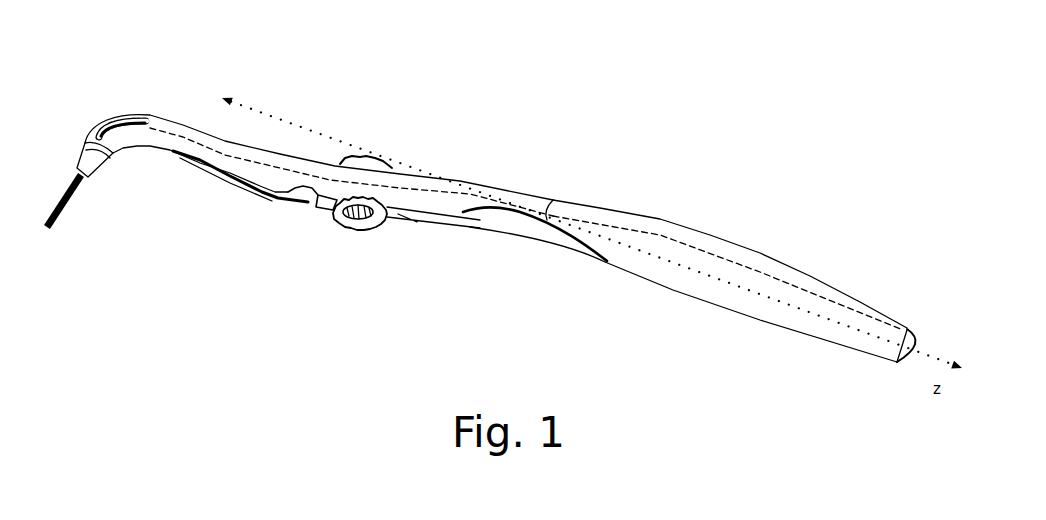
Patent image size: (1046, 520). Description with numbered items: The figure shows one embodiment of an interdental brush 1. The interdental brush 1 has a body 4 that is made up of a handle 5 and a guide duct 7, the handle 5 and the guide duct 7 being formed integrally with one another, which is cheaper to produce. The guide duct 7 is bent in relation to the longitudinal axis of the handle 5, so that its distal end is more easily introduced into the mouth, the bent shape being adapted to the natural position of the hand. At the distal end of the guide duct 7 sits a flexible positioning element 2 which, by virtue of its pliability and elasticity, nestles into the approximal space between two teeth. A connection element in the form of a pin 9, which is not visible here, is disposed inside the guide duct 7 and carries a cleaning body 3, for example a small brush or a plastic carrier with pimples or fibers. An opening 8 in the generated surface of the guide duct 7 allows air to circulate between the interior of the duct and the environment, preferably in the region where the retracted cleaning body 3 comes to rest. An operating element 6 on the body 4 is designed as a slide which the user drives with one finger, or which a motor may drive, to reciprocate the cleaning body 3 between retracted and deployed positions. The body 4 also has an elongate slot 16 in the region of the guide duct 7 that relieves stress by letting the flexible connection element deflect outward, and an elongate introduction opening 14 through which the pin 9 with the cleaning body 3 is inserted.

The interdental brush 1 is at (390, 60).
The positioning element 2 is at (95, 167).
The cleaning body 3 is at (57, 222).
The body 4 is at (655, 150).
The handle 5 is at (803, 283).
The operating element 6 is at (353, 225).
The guide duct 7 is at (252, 187).
The opening 8 is at (135, 116).
The connection element (pin) 9 is at (315, 163).
The elongate introduction opening 14 is at (316, 225).
The elongate slot 16 is at (253, 190).